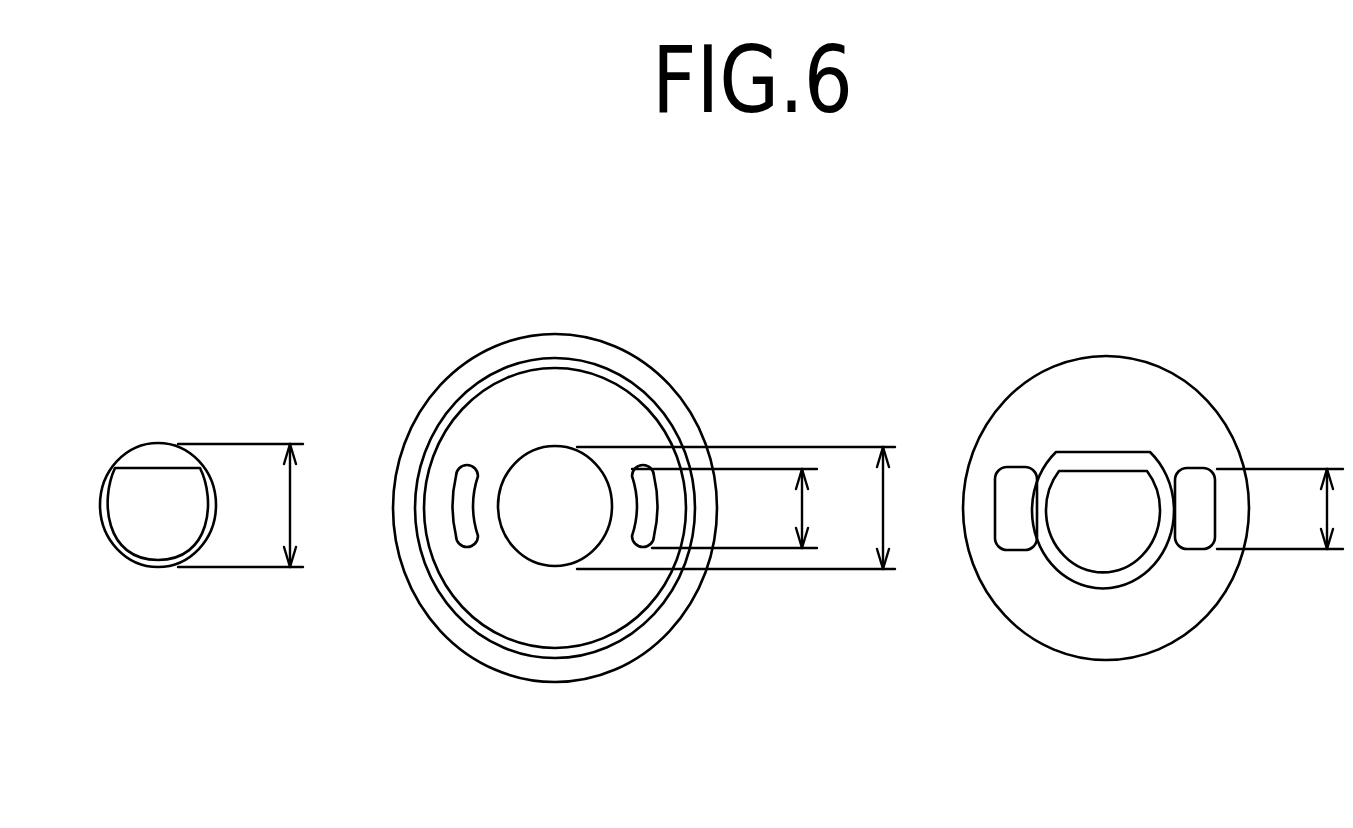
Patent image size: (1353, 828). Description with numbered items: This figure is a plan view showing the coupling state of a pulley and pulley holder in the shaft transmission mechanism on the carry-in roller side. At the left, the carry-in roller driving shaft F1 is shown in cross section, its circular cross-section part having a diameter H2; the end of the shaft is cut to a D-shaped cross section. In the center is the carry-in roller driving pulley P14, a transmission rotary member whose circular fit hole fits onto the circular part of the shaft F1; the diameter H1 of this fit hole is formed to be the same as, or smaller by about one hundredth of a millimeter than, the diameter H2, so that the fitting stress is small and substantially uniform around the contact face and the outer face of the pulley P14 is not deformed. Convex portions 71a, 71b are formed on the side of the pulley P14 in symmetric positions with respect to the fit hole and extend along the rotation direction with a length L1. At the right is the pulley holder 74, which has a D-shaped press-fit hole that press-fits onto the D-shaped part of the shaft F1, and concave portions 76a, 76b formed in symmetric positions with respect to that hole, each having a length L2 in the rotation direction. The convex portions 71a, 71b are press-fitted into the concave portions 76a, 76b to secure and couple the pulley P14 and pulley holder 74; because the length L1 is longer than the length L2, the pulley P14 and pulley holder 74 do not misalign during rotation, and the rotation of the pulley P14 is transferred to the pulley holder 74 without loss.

The carry-in roller driving shaft F1 is at (136, 447).
The diameter of the circular cross-section part H2 is at (240, 505).
The carry-in roller driving pulley P14 is at (563, 333).
The convex portion 71a is at (643, 533).
The convex portion 71b is at (466, 536).
The length in the rotation direction of the convex portions L1 is at (724, 508).
The diameter of the circular fit hole H1 is at (736, 508).
The pulley holder 74 is at (1093, 358).
The concave portion 76a is at (1190, 535).
The concave portion 76b is at (1013, 540).
The length in the rotation direction of the concave portions L2 is at (1280, 509).